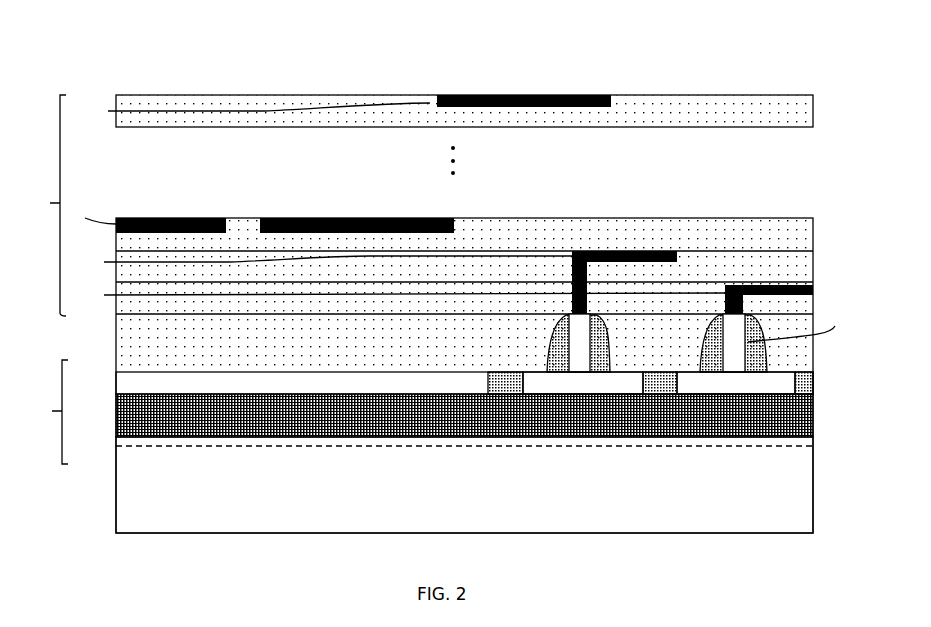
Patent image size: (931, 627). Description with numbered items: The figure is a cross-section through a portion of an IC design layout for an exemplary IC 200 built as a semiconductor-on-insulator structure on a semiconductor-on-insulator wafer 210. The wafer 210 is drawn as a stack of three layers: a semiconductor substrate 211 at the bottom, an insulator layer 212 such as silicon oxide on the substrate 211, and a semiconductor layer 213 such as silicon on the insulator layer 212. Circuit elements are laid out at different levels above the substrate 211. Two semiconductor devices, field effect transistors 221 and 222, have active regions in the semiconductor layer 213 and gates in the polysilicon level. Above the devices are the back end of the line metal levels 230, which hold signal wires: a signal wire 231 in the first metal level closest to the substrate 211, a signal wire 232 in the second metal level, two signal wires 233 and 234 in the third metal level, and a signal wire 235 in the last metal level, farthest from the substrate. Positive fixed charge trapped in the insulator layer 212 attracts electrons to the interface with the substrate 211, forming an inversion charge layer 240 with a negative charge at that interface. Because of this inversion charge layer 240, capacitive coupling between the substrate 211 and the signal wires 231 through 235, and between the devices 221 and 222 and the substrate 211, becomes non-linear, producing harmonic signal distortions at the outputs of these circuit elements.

The IC 200 is at (140, 42).
The semiconductor-on-insulator wafer 210 is at (46, 412).
The semiconductor substrate 211 is at (116, 464).
The insulator layer 212 is at (116, 417).
The semiconductor layer 213 is at (116, 387).
The field effect transistor 221 is at (577, 403).
The field effect transistor 222 is at (739, 403).
The back end of the line metal levels 230 is at (415, 205).
The signal wire 231 is at (772, 284).
The signal wire 232 is at (625, 251).
The signal wire 233 is at (173, 218).
The signal wire 234 is at (376, 218).
The signal wire 235 is at (524, 94).
The inversion charge layer 240 is at (847, 432).